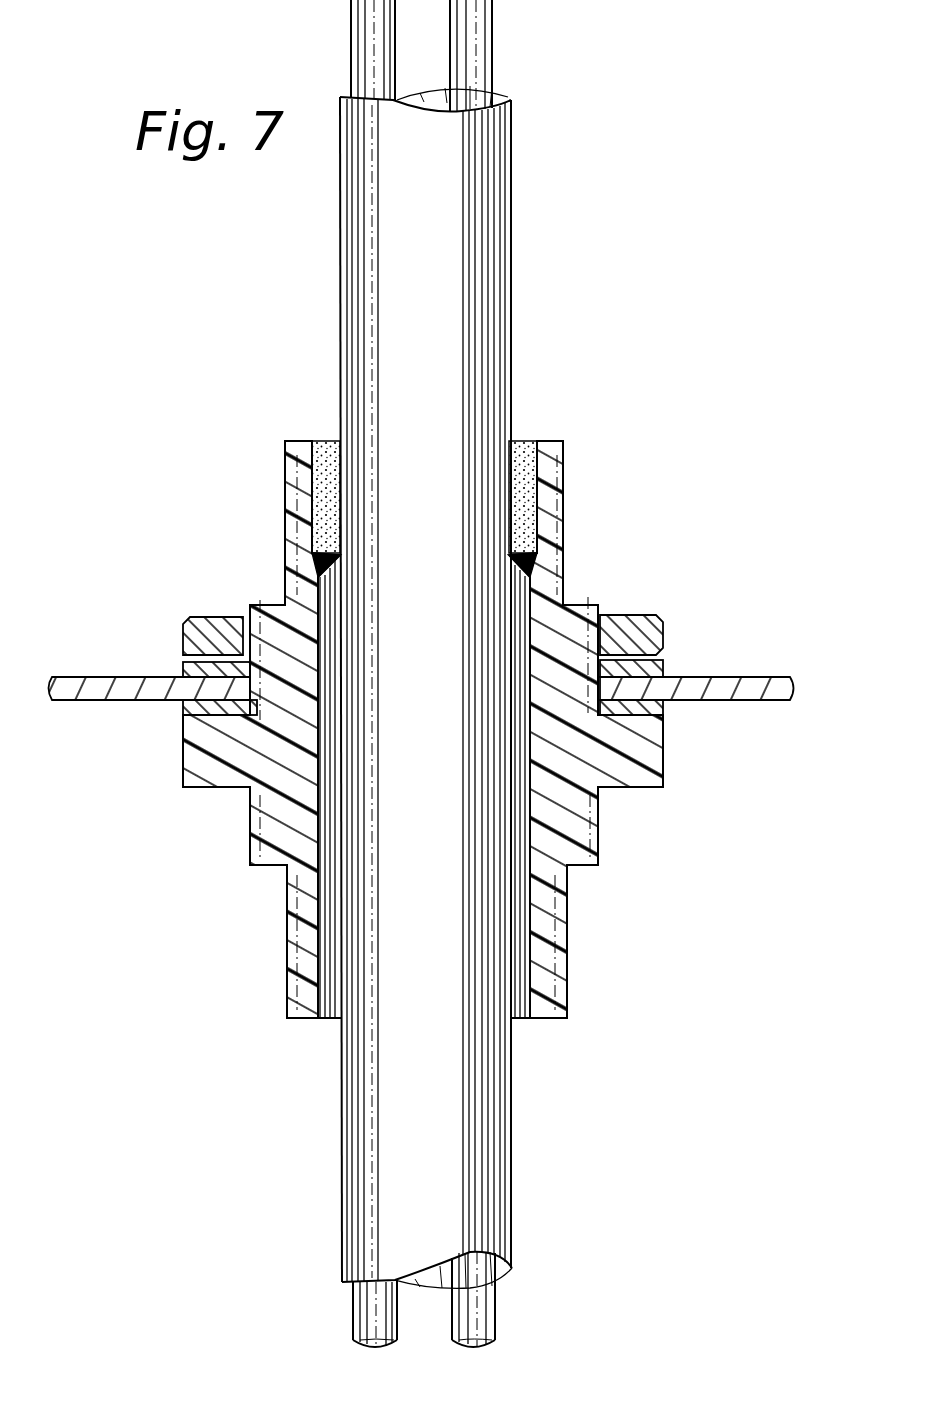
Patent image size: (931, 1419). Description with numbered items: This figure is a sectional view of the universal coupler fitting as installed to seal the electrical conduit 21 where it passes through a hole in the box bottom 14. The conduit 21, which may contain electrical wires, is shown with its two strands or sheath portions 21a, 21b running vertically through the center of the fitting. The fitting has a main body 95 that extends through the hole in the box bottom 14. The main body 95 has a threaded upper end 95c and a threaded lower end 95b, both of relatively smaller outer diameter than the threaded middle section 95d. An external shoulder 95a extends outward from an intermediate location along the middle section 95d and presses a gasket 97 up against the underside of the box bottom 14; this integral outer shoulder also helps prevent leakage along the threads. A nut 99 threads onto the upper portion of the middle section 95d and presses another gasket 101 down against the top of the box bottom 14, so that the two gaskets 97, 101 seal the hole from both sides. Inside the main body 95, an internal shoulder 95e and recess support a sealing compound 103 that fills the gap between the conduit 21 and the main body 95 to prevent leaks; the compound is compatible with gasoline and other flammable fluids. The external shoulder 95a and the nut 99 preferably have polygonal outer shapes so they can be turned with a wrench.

The box bottom 14 is at (733, 700).
The electrical conduit 21 is at (510, 1098).
The first tube 21a is at (350, 27).
The second tube 21b is at (492, 15).
The main body 95 is at (212, 791).
The external shoulder 95a is at (183, 753).
The threaded lower end 95b is at (287, 967).
The threaded upper end 95c is at (283, 483).
The threaded middle section 95d is at (583, 601).
The internal shoulder 95e is at (348, 582).
The gasket 97 is at (183, 708).
The nut 99 is at (183, 637).
The gasket 101 is at (183, 663).
The sealing compound 103 is at (515, 468).